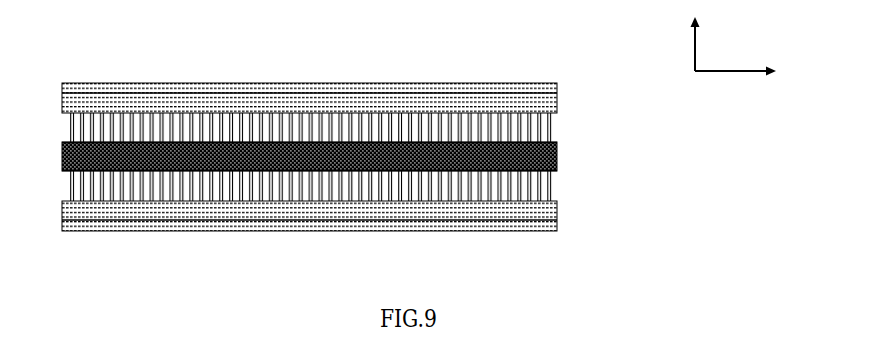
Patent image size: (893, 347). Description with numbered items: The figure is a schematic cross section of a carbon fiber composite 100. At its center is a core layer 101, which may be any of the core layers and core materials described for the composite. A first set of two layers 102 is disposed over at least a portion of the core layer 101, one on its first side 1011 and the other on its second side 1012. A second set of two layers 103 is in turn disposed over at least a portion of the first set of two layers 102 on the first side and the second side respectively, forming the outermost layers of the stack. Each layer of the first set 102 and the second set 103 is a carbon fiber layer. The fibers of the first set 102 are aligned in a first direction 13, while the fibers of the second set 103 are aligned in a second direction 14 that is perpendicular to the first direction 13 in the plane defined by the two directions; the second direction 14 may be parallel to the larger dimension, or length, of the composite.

The display panel / laminated structure 100 is at (368, 161).
The core layer 101 is at (355, 161).
The first side 1011 is at (556, 147).
The second side 1012 is at (556, 173).
The first set of two layers 102 is at (369, 157).
The second set of two layers 103 is at (557, 211).
The first direction 13 is at (681, 39).
The second direction 14 is at (738, 83).